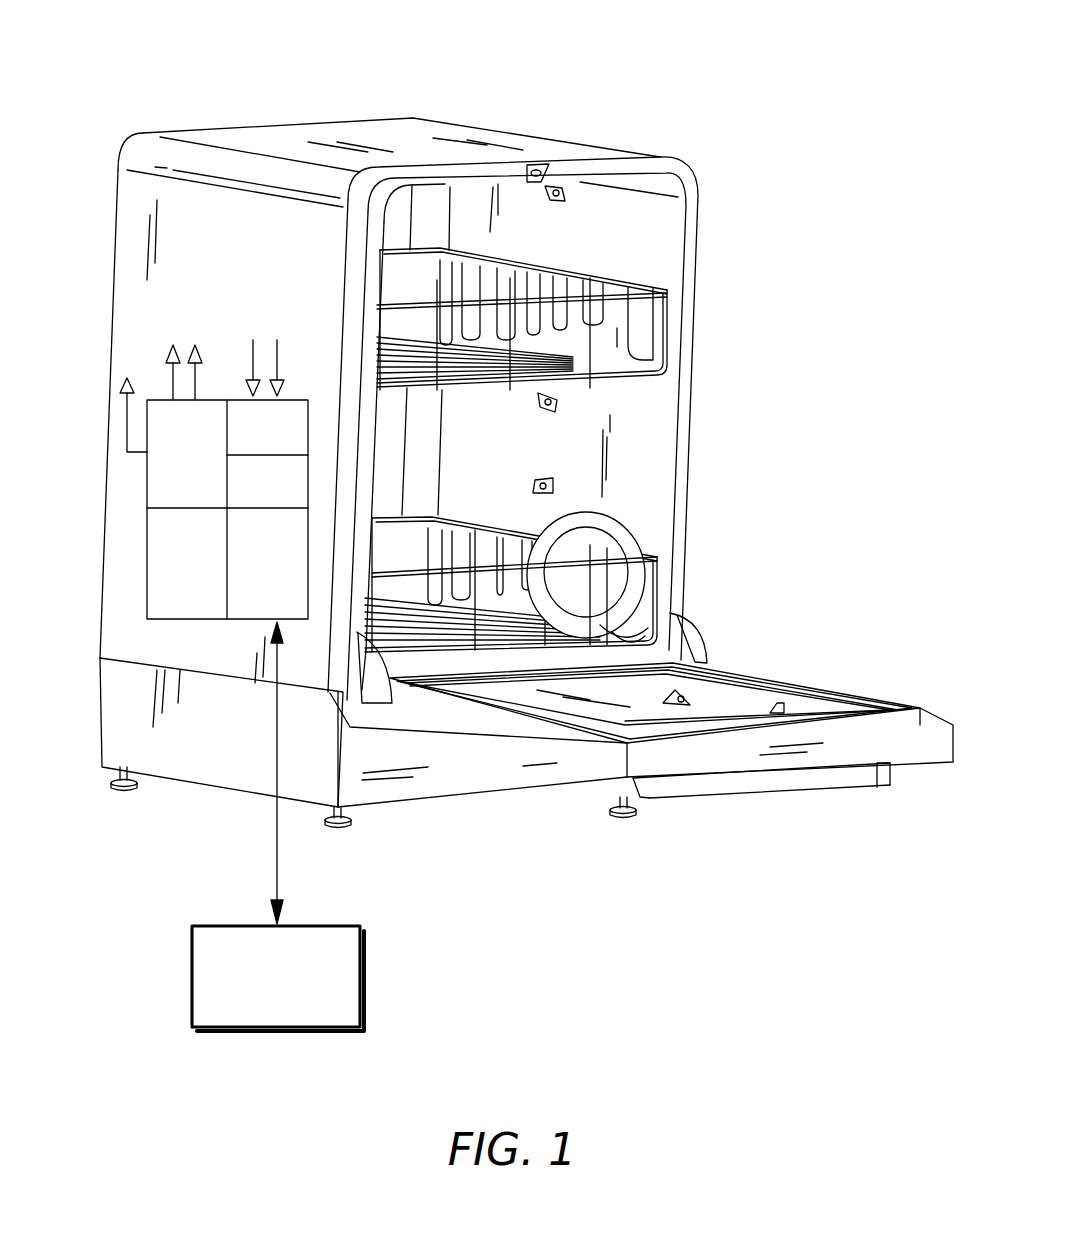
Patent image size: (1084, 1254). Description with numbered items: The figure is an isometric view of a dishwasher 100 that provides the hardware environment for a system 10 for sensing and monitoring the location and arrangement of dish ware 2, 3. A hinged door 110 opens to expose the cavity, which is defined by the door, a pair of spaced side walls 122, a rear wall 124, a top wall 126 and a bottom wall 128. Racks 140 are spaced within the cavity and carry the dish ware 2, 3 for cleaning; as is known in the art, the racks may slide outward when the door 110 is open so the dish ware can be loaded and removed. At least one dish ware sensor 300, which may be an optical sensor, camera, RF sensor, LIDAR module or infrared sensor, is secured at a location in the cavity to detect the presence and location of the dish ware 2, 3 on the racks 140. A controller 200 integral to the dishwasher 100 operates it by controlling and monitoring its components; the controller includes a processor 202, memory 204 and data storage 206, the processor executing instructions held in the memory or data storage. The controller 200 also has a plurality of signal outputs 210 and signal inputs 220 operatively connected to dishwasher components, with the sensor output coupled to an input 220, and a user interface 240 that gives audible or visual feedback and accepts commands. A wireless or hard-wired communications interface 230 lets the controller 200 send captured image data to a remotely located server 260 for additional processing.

The system 10 is at (708, 62).
The dishwasher 100 is at (180, 137).
The dish ware sensor 300 is at (528, 163).
The top wall 126 is at (507, 184).
The dish ware 3 is at (619, 333).
The rack 140 is at (663, 363).
The rear wall 124 is at (390, 465).
The side walls 122 is at (650, 438).
The dish ware 2 is at (640, 547).
The bottom wall 128 is at (487, 657).
The hinged door 110 is at (913, 750).
The controller 200 is at (147, 563).
The user interface 240 is at (168, 466).
The processor 202 is at (249, 446).
The memory 204 is at (249, 495).
The data storage 206 is at (249, 587).
The signal outputs 210 is at (173, 380).
The signal inputs 220 is at (257, 365).
The communications interface 230 is at (127, 413).
The server 260 is at (326, 924).